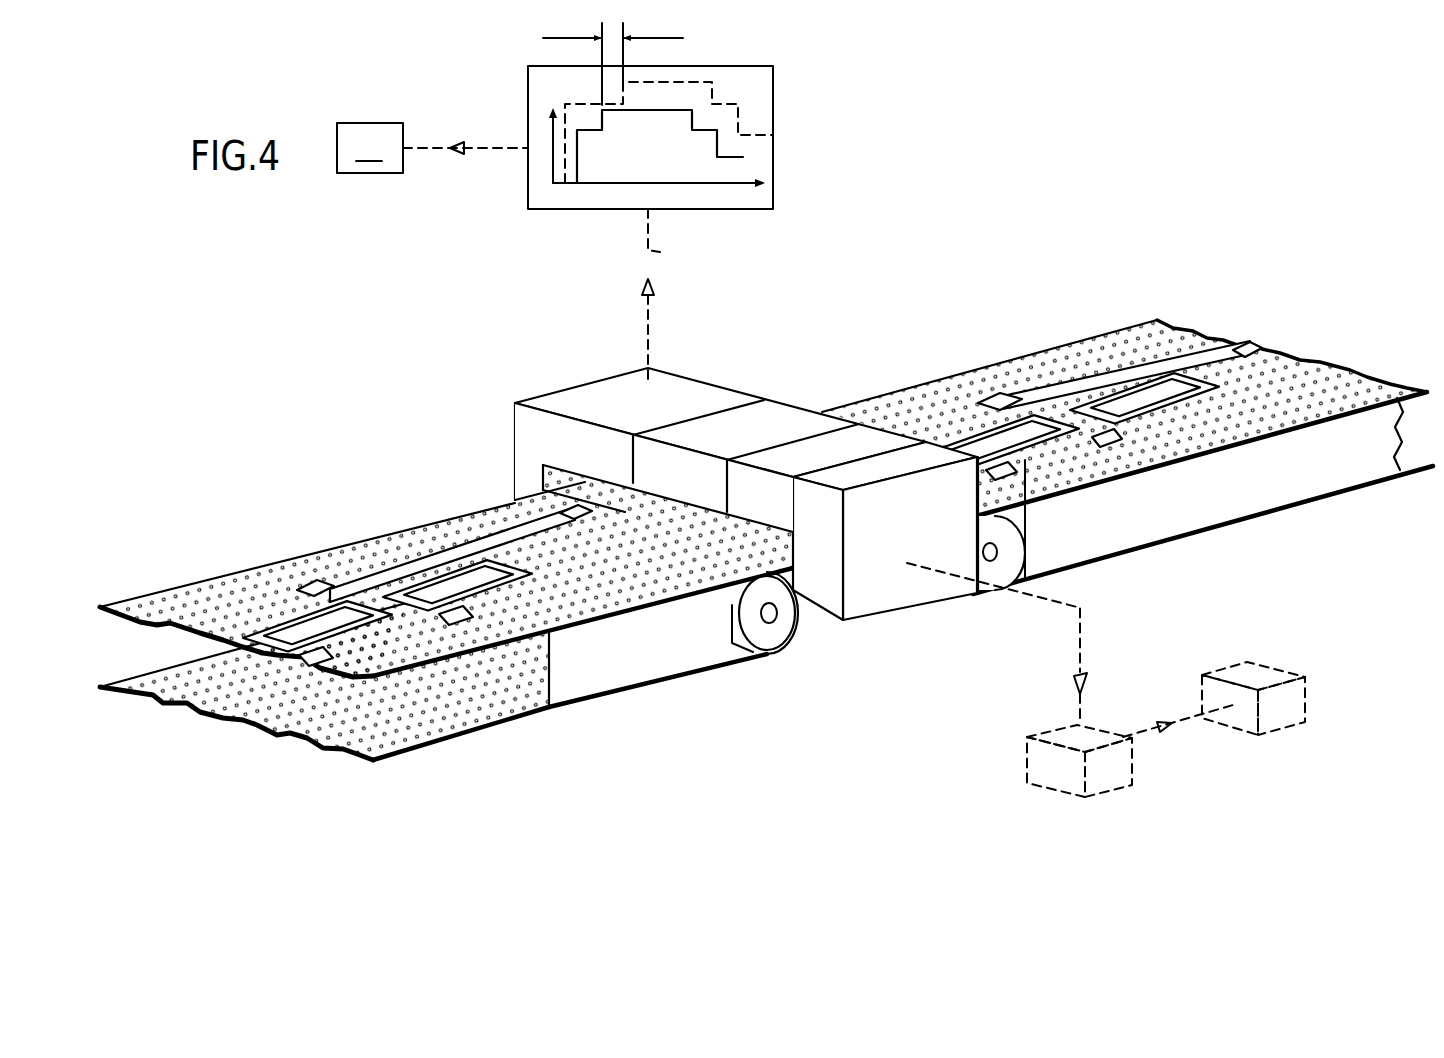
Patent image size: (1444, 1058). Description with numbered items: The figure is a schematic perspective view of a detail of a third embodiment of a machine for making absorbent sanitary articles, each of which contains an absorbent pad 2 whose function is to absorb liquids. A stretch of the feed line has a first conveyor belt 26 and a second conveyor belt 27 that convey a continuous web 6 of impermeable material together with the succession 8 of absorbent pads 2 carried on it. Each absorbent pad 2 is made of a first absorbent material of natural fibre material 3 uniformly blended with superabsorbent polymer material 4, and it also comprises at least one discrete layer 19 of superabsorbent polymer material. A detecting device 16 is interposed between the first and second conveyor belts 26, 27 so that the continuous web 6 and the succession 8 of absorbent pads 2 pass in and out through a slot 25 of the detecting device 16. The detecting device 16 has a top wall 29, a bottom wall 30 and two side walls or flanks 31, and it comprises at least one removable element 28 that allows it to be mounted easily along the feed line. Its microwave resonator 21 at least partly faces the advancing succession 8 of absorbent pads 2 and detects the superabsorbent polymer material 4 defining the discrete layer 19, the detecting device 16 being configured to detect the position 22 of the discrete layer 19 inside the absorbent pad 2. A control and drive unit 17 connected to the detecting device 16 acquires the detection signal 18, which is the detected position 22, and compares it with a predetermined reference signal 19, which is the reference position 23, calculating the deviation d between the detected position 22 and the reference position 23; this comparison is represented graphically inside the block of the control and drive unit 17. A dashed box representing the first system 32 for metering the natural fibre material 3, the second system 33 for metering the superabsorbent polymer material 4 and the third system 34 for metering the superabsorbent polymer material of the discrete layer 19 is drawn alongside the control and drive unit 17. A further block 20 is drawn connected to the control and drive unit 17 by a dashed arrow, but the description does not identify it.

The absorbent pad 2 is at (764, 541).
The natural fibre material (fluff) 3 is at (731, 541).
The superabsorbent polymer material (SAP) 4 is at (764, 541).
The continuous web of impermeable material 6 is at (277, 562).
The succession of absorbent pads 8 is at (428, 580).
The detecting device 16 is at (687, 489).
The control and drive unit 17 is at (835, 420).
The detection signal 18 is at (697, 95).
The discrete layer of superabsorbent polymer material 19 is at (666, 575).
The output unit 20 is at (432, 148).
The microwave resonator 21 is at (770, 427).
The position 22 is at (735, 209).
The reference position 23 is at (638, 117).
The slot 25 is at (543, 473).
The first conveyor belt 26 is at (275, 737).
The second conveyor belt 27 is at (943, 381).
The removable element 28 is at (813, 600).
The top wall 29 is at (678, 401).
The bottom wall 30 is at (803, 637).
The side walls or flanks 31 is at (508, 412).
The first metering system 32 is at (225, 632).
The second metering system 33 is at (1278, 739).
The third metering system 34 is at (1272, 735).